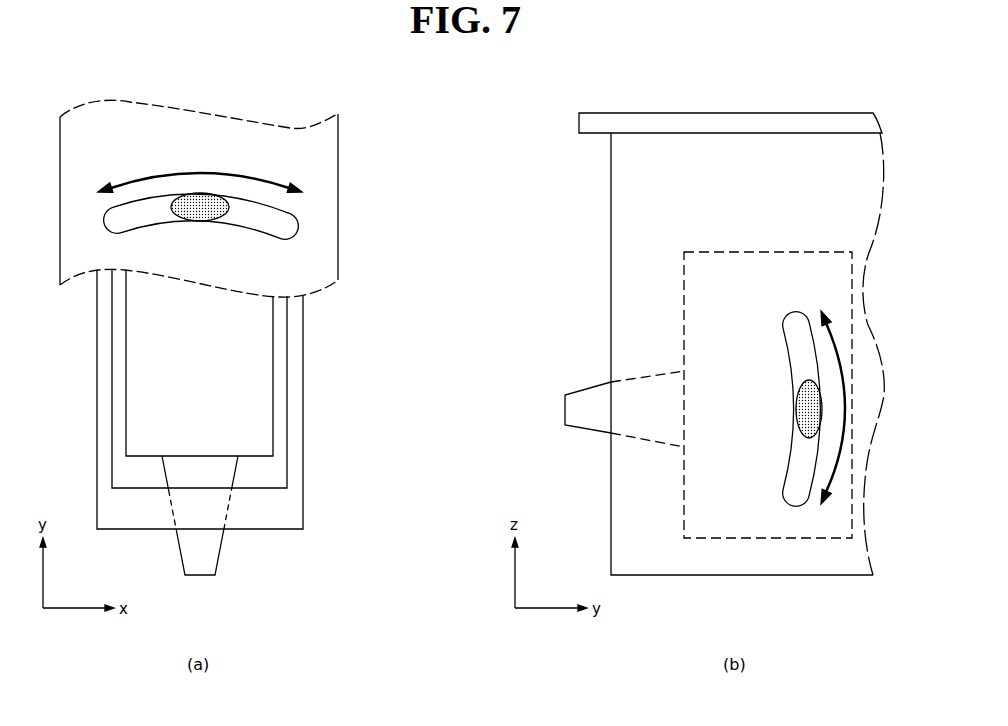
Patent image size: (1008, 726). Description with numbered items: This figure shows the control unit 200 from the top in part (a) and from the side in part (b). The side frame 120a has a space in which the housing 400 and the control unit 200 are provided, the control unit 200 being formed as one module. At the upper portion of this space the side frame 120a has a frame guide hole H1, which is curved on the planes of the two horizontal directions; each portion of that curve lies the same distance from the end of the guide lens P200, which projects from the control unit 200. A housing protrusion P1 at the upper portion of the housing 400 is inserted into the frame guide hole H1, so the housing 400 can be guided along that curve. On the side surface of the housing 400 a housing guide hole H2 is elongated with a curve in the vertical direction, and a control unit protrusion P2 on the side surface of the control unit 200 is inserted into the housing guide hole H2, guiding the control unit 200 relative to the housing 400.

The side frame 120a is at (110, 112).
The housing 400 is at (297, 342).
The control unit 200 is at (265, 402).
The guide lens P200 is at (210, 552).
The frame guide hole H1 is at (257, 213).
The housing guide hole H2 is at (800, 476).
The housing protrusion P1 is at (198, 203).
The control unit protrusion P2 is at (797, 385).